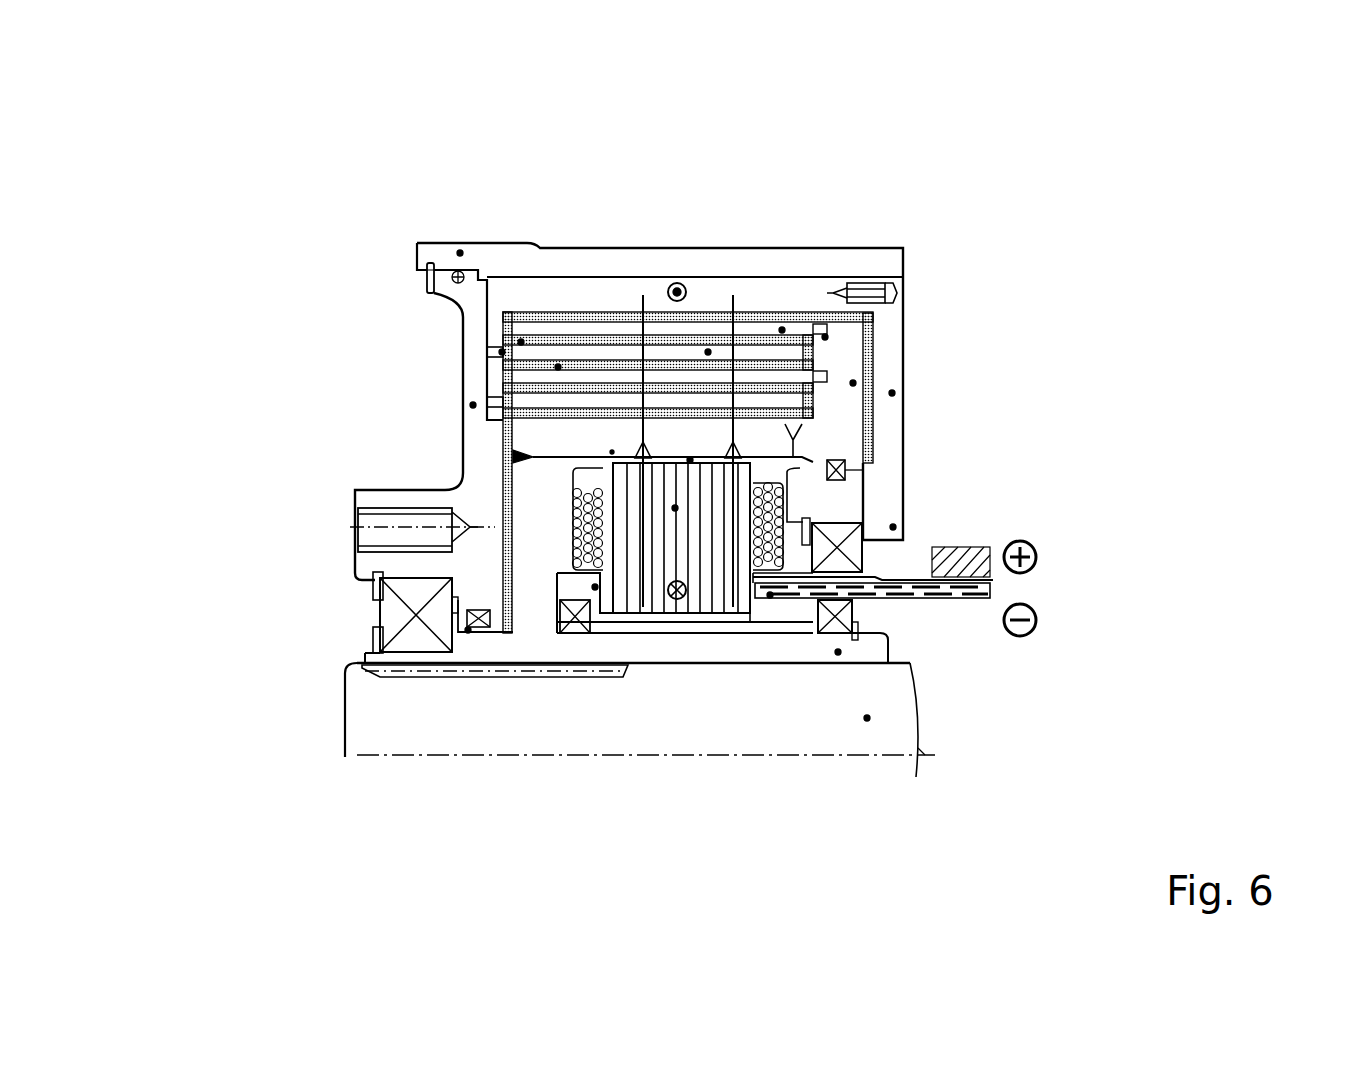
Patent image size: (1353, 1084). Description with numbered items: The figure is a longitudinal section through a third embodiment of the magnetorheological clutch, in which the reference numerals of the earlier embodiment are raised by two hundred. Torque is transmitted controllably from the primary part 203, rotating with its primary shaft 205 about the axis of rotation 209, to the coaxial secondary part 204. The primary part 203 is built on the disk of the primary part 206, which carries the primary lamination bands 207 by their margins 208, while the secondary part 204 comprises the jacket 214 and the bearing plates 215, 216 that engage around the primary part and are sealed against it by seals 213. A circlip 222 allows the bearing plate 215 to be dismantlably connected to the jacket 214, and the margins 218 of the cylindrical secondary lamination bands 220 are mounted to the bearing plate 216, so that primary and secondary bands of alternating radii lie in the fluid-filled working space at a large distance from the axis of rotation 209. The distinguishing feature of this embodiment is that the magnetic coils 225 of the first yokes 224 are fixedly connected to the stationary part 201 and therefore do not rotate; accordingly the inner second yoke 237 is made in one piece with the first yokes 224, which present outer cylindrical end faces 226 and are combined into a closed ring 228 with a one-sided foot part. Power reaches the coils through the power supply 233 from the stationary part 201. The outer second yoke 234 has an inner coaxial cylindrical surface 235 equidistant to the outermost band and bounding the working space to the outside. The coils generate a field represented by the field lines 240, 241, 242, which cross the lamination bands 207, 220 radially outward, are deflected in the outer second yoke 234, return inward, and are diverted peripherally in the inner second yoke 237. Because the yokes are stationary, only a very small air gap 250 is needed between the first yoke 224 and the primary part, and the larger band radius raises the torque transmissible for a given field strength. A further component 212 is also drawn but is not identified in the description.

The stationary part 201 is at (880, 568).
The primary part 203 is at (838, 652).
The secondary part 204 is at (965, 548).
The primary shaft 205 is at (867, 718).
The disk of the primary part 206 is at (853, 383).
The primary lamination bands 207 is at (782, 330).
The margin of primary lamination band 208 is at (825, 337).
The axis of rotation 209 is at (925, 752).
The winding layers 212 is at (558, 367).
The seals 213 is at (893, 527).
The jacket 214 is at (460, 253).
The bearing plate 215 is at (892, 393).
The bearing plate 216 is at (473, 405).
The margins of secondary lamination bands 218 is at (502, 352).
The secondary lamination bands 220 is at (708, 352).
The circlip 222 is at (412, 266).
The first yokes 224 is at (675, 508).
The magnetic coils 225 is at (555, 533).
The outer cylindrical end faces 226 is at (612, 452).
The closed ring 228 is at (248, 629).
The power supply 233 is at (770, 595).
The outer second yoke 234 is at (416, 182).
The inner coaxial cylindrical surface 235 is at (607, 312).
The inner second yoke 237 is at (595, 587).
The field lines 240 is at (657, 343).
The field lines 241 is at (643, 296).
The field lines 242 is at (687, 613).
The air gap 250 is at (690, 460).